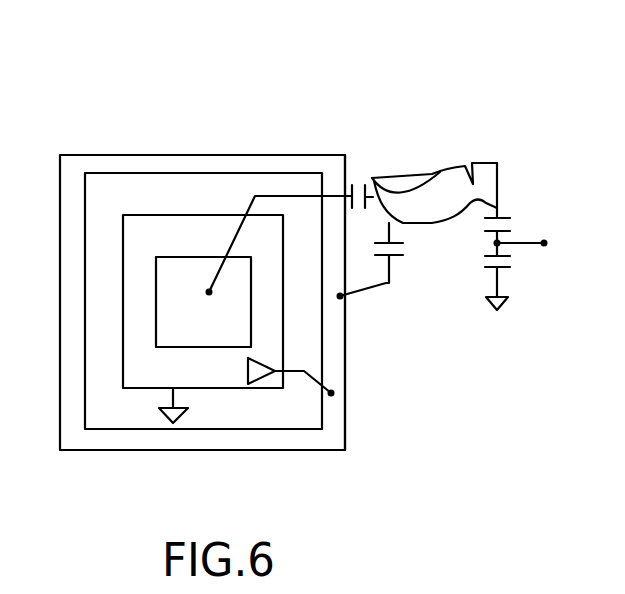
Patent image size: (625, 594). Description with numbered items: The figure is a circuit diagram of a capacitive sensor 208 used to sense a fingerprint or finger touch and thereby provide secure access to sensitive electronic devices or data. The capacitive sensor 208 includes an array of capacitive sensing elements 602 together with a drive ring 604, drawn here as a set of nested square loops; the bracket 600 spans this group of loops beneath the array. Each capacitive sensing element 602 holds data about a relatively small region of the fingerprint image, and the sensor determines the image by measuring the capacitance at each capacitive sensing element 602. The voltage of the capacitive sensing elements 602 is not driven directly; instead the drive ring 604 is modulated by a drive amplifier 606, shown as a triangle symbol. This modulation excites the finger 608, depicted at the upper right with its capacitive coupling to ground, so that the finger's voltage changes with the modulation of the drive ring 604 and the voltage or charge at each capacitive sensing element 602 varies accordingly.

The capacitive sensor 208 is at (70, 78).
The coil antenna 600 is at (285, 470).
The capacitive sensing element 602 is at (186, 267).
The drive ring 604 is at (328, 163).
The drive amplifier 606 is at (252, 362).
The finger 608 is at (490, 165).